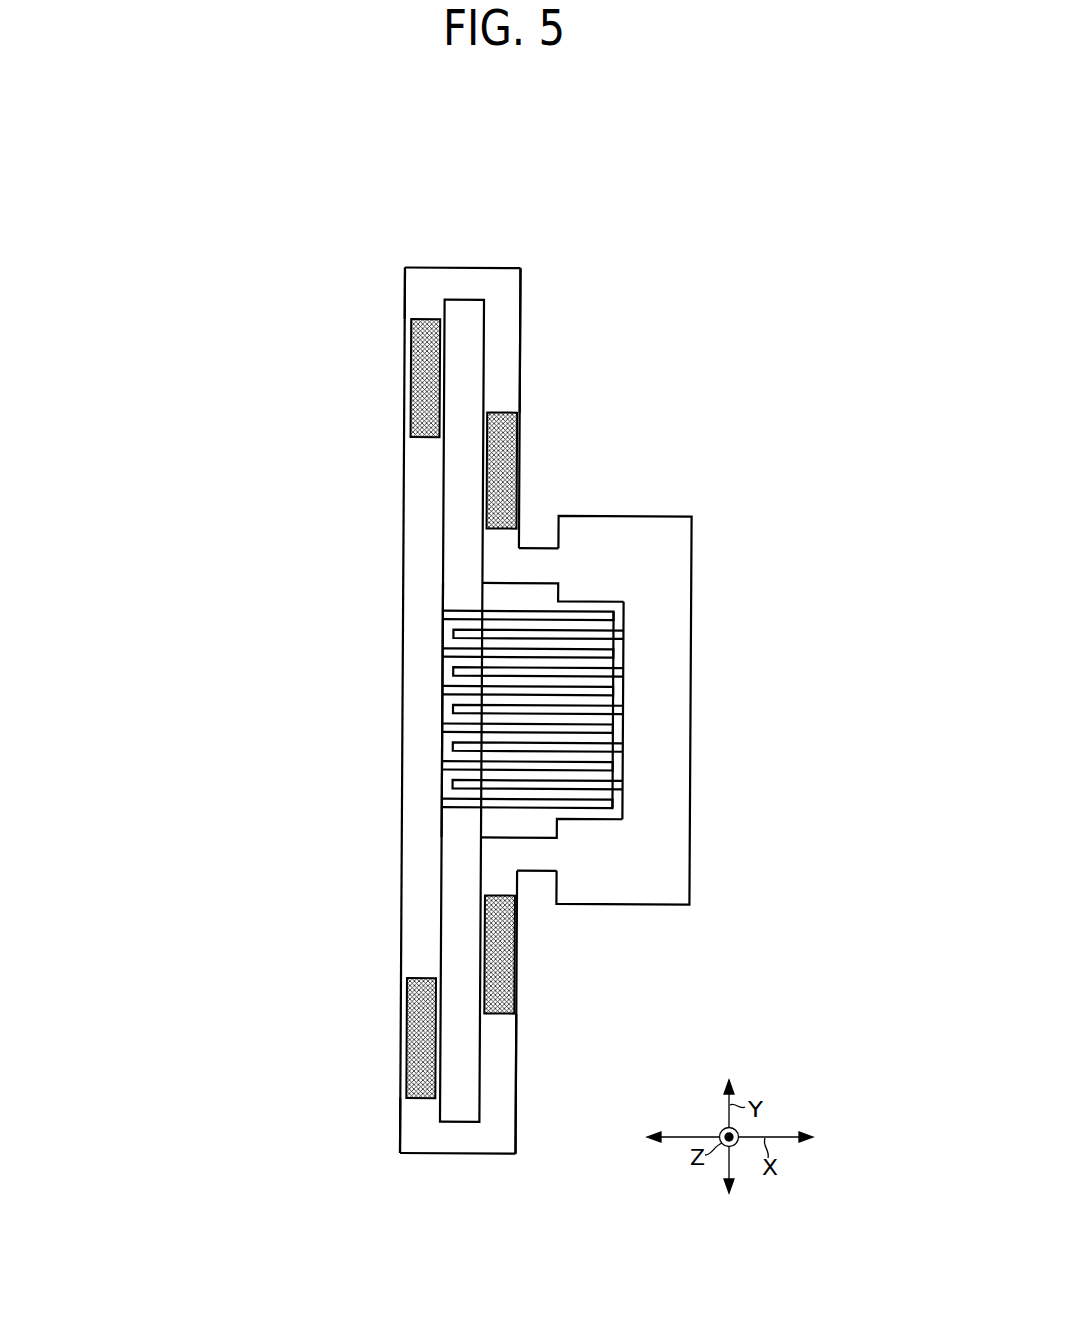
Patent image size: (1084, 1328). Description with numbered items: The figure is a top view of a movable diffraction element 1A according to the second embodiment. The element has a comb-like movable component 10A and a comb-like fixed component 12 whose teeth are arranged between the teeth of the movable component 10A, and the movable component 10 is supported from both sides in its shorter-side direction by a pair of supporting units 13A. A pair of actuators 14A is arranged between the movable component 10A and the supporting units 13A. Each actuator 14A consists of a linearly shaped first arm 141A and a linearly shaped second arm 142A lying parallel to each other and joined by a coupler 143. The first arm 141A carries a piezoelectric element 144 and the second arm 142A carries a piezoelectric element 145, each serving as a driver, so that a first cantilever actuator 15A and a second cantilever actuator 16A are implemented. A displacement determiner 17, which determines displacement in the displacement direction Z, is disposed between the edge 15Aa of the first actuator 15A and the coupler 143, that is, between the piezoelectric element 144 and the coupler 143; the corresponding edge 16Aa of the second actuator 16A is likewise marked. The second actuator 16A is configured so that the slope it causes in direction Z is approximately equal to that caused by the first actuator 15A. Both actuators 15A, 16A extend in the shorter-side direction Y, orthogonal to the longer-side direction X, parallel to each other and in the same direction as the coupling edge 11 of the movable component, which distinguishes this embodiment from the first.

The movable diffraction element 1A is at (759, 542).
The movable component 10 is at (440, 807).
The comb-like movable component 10A is at (468, 613).
The coupling edge 11 is at (407, 693).
The comb-like fixed component 12 is at (637, 600).
The supporting unit 13A is at (528, 563).
The actuator 14A is at (536, 279).
The first arm 141A is at (520, 390).
The second arm 142A is at (412, 477).
The coupler 143 is at (460, 273).
The piezoelectric element 144 is at (513, 452).
The piezoelectric element 145 is at (412, 386).
The first cantilever actuator 15A is at (557, 470).
The edge of first actuator 15Aa is at (502, 392).
The second cantilever actuator 16A is at (388, 344).
The edge of second actuator 16Aa is at (420, 290).
The displacement determiner 17 is at (510, 313).